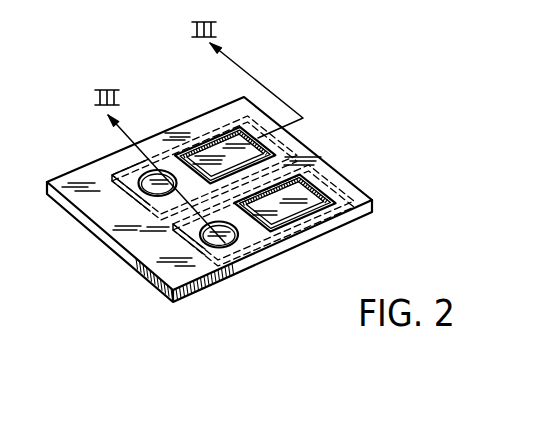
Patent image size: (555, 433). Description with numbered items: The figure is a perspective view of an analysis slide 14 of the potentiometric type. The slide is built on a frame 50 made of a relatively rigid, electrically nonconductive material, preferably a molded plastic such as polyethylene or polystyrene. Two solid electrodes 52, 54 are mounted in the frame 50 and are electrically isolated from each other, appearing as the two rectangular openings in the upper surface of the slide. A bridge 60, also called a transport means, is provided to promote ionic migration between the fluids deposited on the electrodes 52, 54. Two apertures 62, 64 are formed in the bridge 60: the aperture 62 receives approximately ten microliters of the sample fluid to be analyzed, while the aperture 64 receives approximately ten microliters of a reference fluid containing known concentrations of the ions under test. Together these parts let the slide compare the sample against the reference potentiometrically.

The analysis slide 14 is at (326, 146).
The frame 50 is at (150, 282).
The solid electrode 52 is at (293, 208).
The solid electrode 54 is at (221, 148).
The bridge 60 is at (128, 256).
The aperture 62 is at (152, 181).
The aperture 64 is at (221, 240).